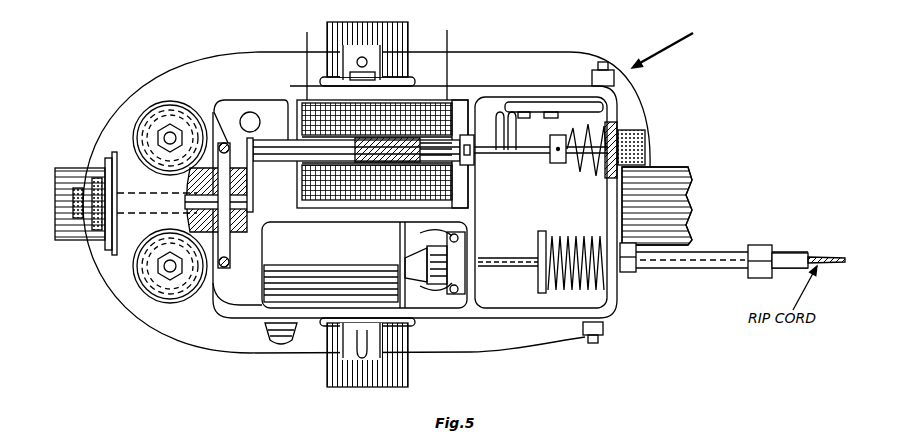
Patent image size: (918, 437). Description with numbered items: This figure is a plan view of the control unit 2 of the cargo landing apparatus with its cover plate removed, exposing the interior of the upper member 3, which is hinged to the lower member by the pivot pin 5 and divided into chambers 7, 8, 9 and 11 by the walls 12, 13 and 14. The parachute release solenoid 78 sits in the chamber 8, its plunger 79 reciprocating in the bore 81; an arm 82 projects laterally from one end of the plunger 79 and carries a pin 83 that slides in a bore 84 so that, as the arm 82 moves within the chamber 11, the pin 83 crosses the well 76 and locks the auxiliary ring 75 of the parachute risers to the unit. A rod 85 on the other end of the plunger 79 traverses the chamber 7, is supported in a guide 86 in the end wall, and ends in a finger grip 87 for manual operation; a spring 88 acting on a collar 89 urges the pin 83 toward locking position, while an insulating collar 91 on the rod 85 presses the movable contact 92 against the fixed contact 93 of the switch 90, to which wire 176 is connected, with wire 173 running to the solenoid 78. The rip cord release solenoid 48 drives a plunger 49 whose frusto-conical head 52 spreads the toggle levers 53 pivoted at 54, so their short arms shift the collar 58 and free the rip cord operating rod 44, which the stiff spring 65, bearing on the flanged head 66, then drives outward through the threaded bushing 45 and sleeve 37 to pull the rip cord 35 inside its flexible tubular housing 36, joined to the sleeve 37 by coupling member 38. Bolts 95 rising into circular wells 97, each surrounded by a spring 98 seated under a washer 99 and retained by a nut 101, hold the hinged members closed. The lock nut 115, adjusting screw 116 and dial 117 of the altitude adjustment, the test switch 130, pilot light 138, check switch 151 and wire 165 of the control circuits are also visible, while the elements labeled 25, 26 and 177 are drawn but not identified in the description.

The control unit 2 is at (670, 46).
The upper member 3 is at (140, 312).
The pivot pin 5 is at (600, 62).
The chamber 7 is at (538, 206).
The chamber 8 is at (463, 98).
The chamber 9 is at (240, 297).
The chamber 11 is at (275, 108).
The wall 12 is at (475, 203).
The wall 13 is at (323, 215).
The wall 14 is at (252, 182).
The bellows block 25 is at (690, 185).
The lower mount 26 is at (382, 375).
The rip cord 35 is at (833, 253).
The flexible tubular housing 36 is at (795, 257).
The sleeve 37 is at (735, 272).
The coupling member 38 is at (760, 250).
The rip cord operating rod 44 is at (525, 258).
The threaded bushing 45 is at (628, 272).
The solenoid 48 is at (320, 280).
The plunger 49 is at (407, 263).
The frusto-conical head 52 is at (433, 287).
The toggle levers 53 is at (437, 247).
The pivot 54 is at (448, 293).
The collar 58 is at (462, 263).
The spring 65 is at (563, 290).
The flanged head 66 is at (540, 290).
The auxiliary ring 75 is at (223, 143).
The well 76 is at (222, 267).
The solenoid 78 is at (428, 100).
The plunger 79 is at (338, 150).
The bore 81 is at (428, 157).
The arm 82 is at (235, 178).
The pin 83 is at (235, 205).
The bore 84 is at (185, 202).
The rod 85 is at (483, 140).
The guide 86 is at (620, 120).
The finger grip 87 is at (643, 135).
The spring 88 is at (587, 180).
The collar 89 is at (558, 163).
The switch 90 is at (532, 110).
The insulating collar 91 is at (470, 133).
The movable contact 92 is at (492, 152).
The fixed contact 93 is at (513, 152).
The bolts 95 is at (177, 133).
The circular wells 97 is at (147, 108).
The spring 98 is at (143, 128).
The washers 99 is at (160, 103).
The nuts 101 is at (170, 132).
The lock nut 115 is at (92, 238).
The adjusting screw 116 is at (77, 220).
The dial 117 is at (108, 250).
The test switch 130 is at (363, 357).
The pilot light 138 is at (278, 343).
The check switch 151 is at (366, 58).
The wire 165 is at (288, 52).
The wire 173 is at (449, 35).
The wire 176 is at (572, 112).
The pointer line 177 is at (617, 125).